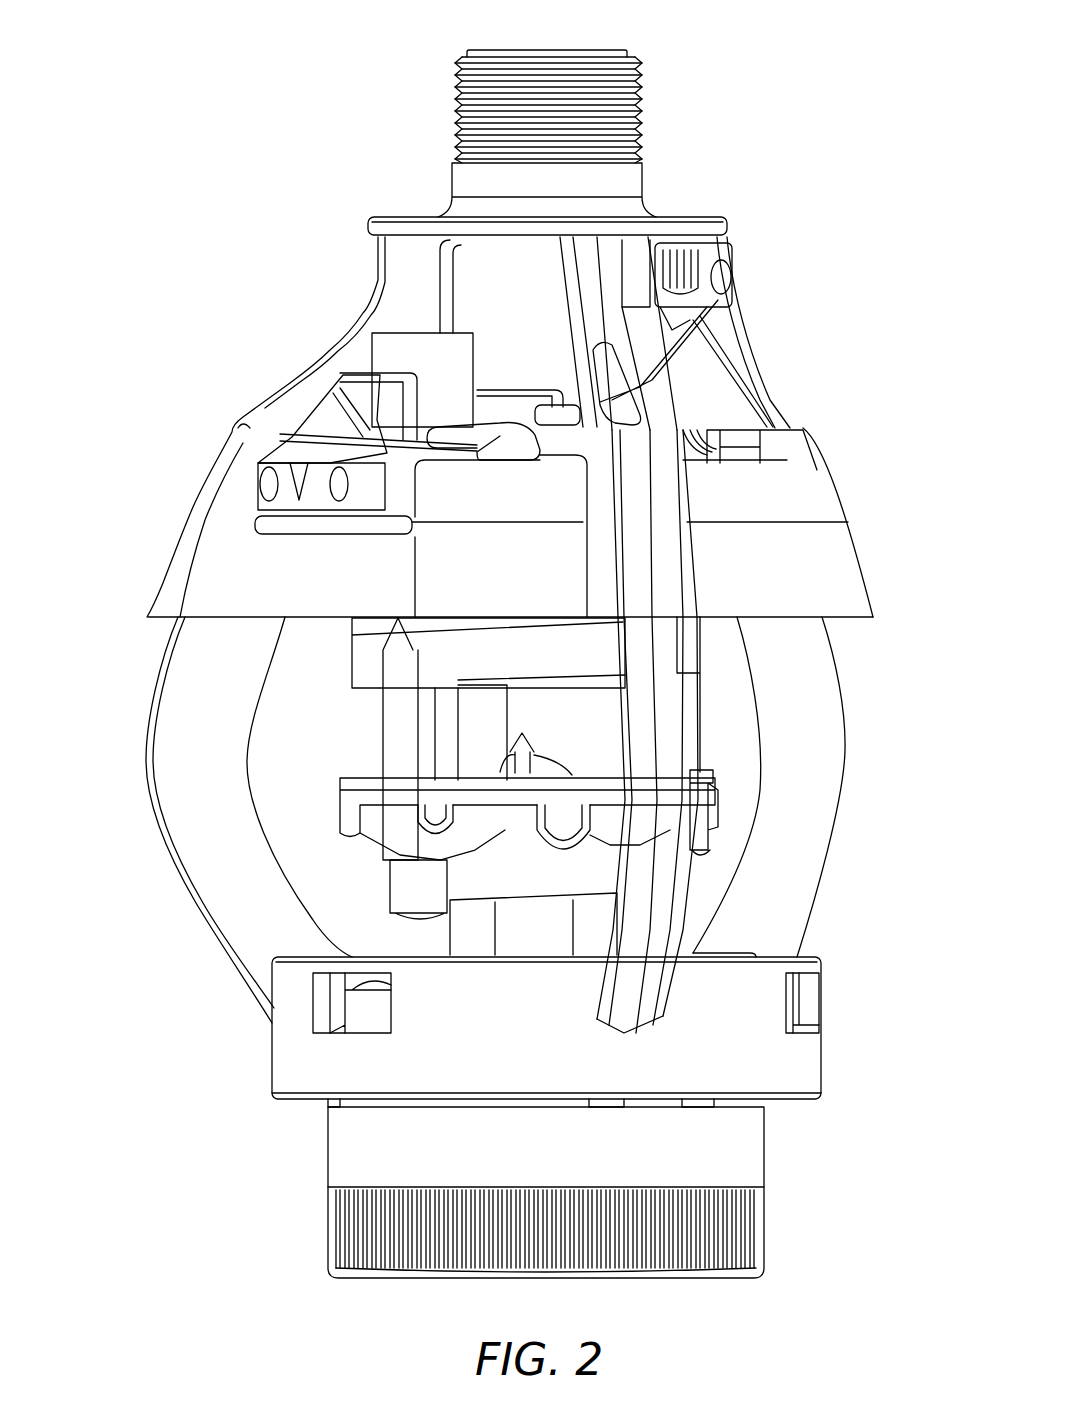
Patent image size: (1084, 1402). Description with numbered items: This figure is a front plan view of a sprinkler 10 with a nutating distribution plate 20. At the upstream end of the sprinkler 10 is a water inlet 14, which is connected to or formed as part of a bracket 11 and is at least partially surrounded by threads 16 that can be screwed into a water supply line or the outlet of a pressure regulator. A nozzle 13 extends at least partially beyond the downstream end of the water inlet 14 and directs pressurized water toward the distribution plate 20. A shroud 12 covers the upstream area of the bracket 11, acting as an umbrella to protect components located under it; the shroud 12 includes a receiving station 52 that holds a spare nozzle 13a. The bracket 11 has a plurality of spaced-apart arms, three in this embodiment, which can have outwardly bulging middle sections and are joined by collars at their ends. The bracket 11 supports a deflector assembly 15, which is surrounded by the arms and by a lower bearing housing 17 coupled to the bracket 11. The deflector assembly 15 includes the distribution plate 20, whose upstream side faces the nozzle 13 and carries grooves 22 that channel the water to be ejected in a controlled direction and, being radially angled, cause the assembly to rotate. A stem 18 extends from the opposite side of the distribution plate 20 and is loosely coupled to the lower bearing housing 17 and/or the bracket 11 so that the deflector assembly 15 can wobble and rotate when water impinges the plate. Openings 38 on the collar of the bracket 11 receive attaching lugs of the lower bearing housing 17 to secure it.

The sprinkler 10 is at (166, 152).
The bracket 11 is at (847, 745).
The shroud 12 is at (858, 550).
The nozzle 13 is at (722, 280).
The spare nozzle 13a is at (277, 450).
The water inlet 14 is at (543, 50).
The deflector assembly 15 is at (266, 782).
The threads 16 is at (458, 108).
The lower bearing housing 17 is at (328, 1176).
The stem 18 is at (510, 922).
The distribution plate 20 is at (335, 803).
The grooves 22 is at (437, 802).
The openings 38 is at (315, 1010).
The receiving station 52 is at (225, 526).